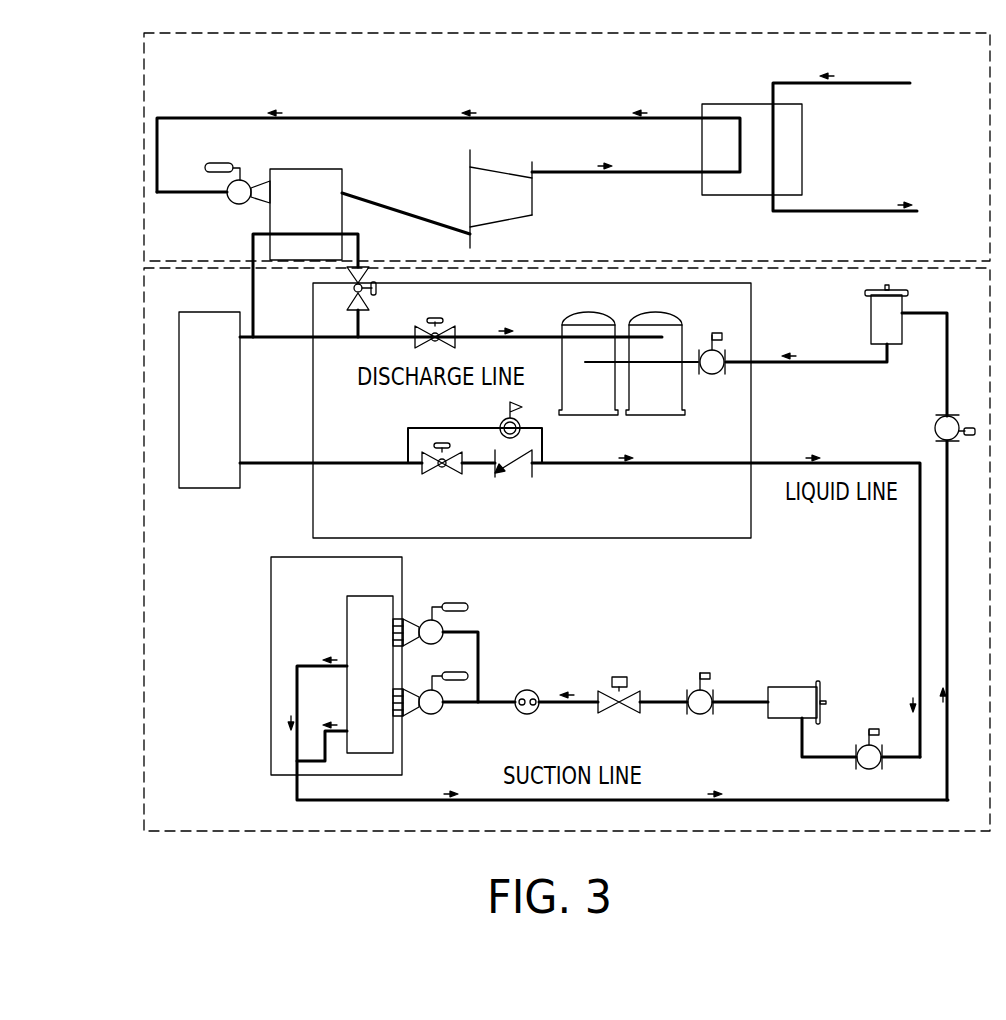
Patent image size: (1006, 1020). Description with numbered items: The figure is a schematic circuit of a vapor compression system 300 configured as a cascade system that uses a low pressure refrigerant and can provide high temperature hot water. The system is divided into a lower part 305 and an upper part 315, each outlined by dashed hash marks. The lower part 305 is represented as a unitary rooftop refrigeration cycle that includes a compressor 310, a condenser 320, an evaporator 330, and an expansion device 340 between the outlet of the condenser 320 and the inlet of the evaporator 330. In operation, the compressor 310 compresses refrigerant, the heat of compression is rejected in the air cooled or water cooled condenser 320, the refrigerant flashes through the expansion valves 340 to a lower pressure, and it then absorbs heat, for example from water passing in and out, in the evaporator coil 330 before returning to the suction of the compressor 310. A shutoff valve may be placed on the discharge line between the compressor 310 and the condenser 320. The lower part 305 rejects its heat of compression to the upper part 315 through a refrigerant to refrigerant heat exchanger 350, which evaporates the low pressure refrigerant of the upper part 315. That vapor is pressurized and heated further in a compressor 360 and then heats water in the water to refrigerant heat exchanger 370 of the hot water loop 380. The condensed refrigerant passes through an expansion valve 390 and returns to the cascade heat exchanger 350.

The vapor compression system 300 is at (226, 100).
The lower part 305 is at (145, 500).
The compressor 310 is at (572, 318).
The upper part 315 is at (145, 133).
The condenser 320 is at (210, 312).
The evaporator 330 is at (361, 596).
The expansion device 340 is at (416, 618).
The refrigerant to refrigerant heat exchanger 350 is at (302, 168).
The compressor 360 is at (473, 167).
The water to refrigerant heat exchanger 370 is at (722, 103).
The hot water loop 380 is at (878, 210).
The expansion valve 390 is at (249, 182).